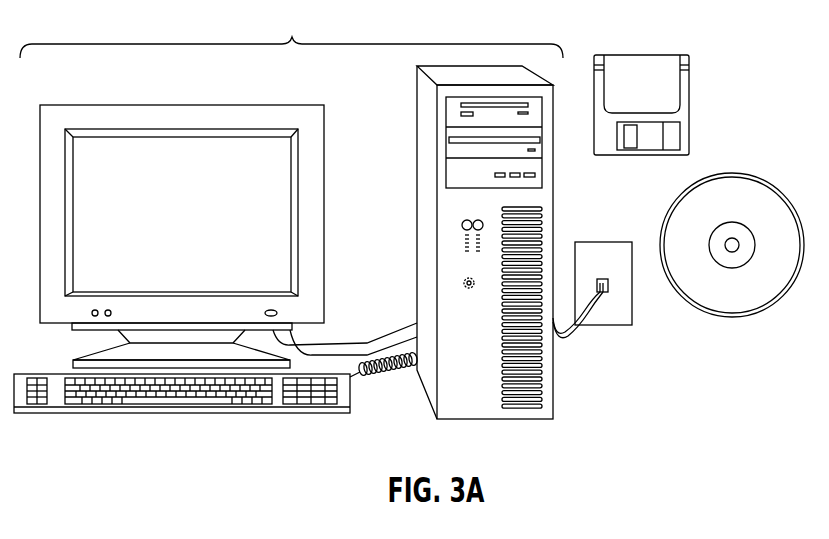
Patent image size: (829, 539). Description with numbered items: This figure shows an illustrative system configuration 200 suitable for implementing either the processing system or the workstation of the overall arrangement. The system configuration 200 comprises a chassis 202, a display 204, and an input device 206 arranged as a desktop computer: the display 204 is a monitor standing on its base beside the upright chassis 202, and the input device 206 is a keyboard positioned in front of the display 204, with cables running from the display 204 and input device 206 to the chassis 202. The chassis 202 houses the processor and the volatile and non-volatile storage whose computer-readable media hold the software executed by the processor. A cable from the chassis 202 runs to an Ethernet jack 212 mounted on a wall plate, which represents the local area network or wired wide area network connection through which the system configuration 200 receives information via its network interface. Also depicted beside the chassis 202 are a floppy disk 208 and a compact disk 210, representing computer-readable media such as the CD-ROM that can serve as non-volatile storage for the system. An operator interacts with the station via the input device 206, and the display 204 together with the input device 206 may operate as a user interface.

The system configuration 200 is at (291, 34).
The chassis 202 is at (417, 280).
The display 204 is at (60, 324).
The input device 206 is at (52, 414).
The floppy disk 208 is at (689, 132).
The optical disc (CD-ROM) 210 is at (743, 173).
The Ethernet jack 212 is at (596, 243).